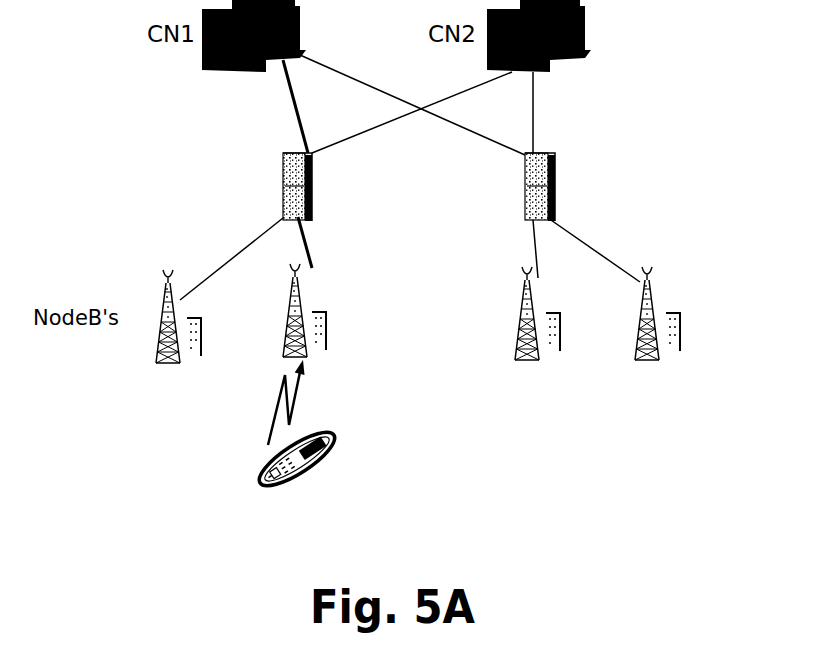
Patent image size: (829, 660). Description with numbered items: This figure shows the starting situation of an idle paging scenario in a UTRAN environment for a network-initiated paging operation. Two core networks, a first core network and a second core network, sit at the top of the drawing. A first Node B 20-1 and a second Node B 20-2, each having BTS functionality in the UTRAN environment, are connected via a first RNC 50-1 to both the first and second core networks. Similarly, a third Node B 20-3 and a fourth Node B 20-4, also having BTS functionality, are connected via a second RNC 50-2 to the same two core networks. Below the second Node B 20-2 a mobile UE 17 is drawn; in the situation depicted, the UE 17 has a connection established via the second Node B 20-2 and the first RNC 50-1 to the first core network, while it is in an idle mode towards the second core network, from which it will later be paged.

The first RNC 50-1 is at (258, 187).
The second RNC 50-2 is at (577, 188).
The first Node B 20-1 is at (168, 334).
The second Node B 20-2 is at (332, 327).
The third Node B 20-3 is at (528, 330).
The fourth Node B 20-4 is at (650, 330).
The UE 17 is at (296, 443).